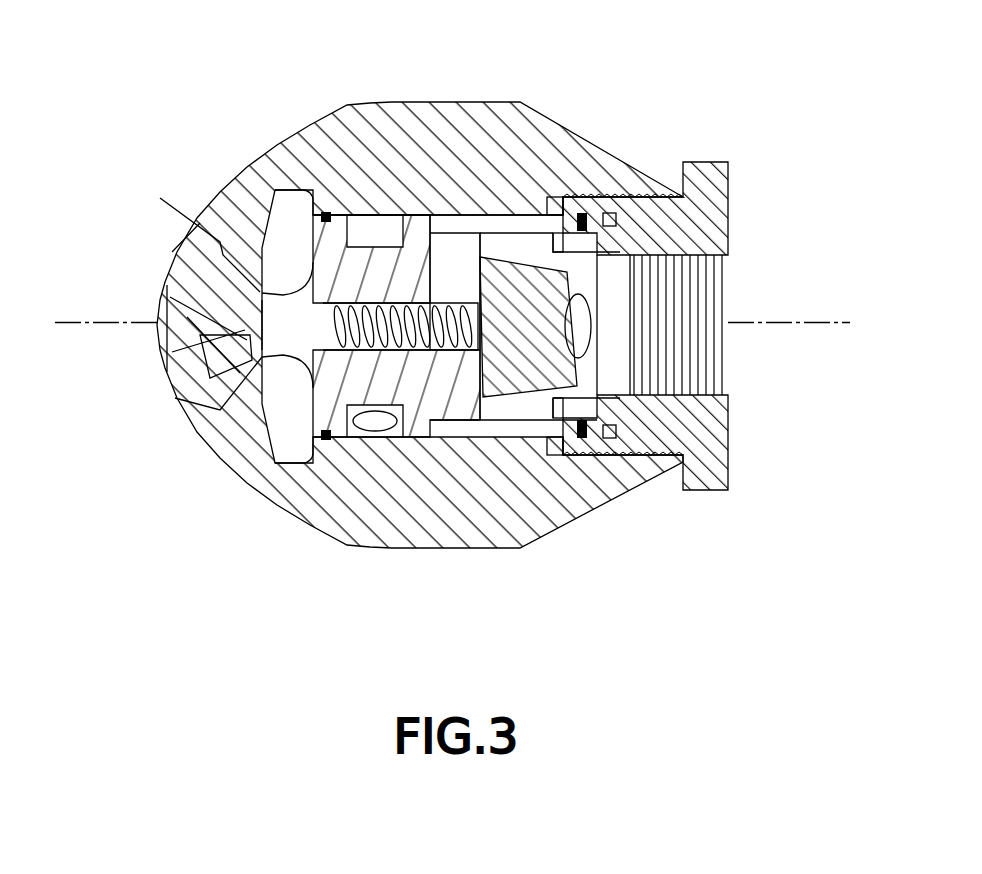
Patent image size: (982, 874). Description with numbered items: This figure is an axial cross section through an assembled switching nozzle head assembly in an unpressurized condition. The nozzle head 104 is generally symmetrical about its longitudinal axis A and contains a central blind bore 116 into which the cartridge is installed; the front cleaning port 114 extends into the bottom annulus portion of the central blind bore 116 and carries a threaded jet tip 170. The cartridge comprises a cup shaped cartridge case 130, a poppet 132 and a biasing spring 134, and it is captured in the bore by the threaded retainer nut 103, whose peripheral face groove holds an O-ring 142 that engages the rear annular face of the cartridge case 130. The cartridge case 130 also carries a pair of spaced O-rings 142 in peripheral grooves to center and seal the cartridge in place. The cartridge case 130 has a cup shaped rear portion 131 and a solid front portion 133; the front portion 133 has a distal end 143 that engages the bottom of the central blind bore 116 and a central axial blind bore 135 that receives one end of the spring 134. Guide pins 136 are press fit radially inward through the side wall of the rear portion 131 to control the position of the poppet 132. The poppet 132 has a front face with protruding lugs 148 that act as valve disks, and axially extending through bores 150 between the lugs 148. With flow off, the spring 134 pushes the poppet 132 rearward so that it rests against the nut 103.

The threaded retainer nut 103 is at (728, 162).
The nozzle head 104 is at (360, 103).
The front cleaning port 114 is at (163, 295).
The central blind bore 116 is at (470, 214).
The cartridge case 130 is at (463, 448).
The cup shaped rear portion 131 is at (470, 232).
The poppet 132 is at (600, 225).
The solid front portion 133 is at (320, 238).
The biasing spring 134 is at (428, 303).
The central axial blind bore 135 is at (262, 416).
The guide pins 136 is at (540, 446).
The O-ring 142 is at (583, 208).
The distal end 143 is at (200, 223).
The lugs 148 is at (476, 262).
The through bores 150 is at (513, 277).
The threaded jet tip 170 is at (157, 372).
The longitudinal axis A is at (790, 323).